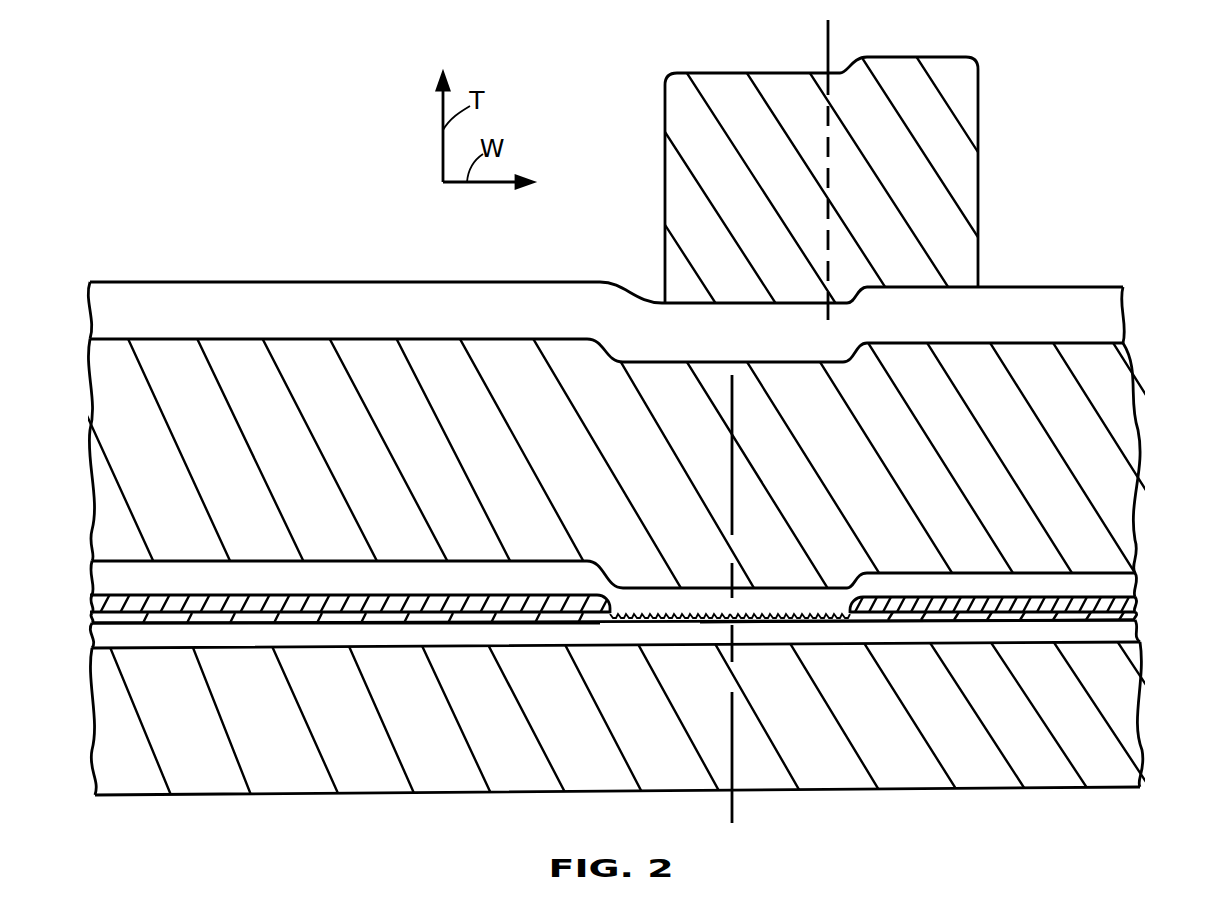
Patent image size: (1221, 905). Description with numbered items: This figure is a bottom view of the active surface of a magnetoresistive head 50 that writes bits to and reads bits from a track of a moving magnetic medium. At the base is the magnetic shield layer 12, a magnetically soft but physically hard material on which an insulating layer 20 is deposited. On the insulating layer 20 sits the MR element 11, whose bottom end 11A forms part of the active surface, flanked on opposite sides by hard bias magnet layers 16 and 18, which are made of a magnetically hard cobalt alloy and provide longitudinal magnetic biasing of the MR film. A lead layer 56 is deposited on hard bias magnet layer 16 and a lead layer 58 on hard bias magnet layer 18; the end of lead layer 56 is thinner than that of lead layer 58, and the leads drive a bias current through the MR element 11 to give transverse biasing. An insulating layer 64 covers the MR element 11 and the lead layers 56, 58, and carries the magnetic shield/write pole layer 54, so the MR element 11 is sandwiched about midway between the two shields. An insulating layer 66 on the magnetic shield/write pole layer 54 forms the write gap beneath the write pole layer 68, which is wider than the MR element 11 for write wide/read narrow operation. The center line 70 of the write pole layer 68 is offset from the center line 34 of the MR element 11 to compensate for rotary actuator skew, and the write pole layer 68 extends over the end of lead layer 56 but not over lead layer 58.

The MR element 11 is at (760, 625).
The bottom end 11A is at (673, 625).
The magnetic shield layer 12 is at (1065, 774).
The hard bias magnet layer 16 is at (1128, 626).
The hard bias magnet layer 18 is at (118, 627).
The insulating layer 20 is at (1118, 641).
The center line 34 is at (735, 594).
The MR head 50 is at (1110, 176).
The magnetic shield/write pole layer 54 is at (1133, 441).
The lead layer 56 is at (1135, 605).
The lead layer 58 is at (114, 611).
The insulating layer 64 is at (1134, 579).
The insulating layer 66 is at (1130, 318).
The write pole layer 68 is at (974, 102).
The center line 70 is at (830, 45).